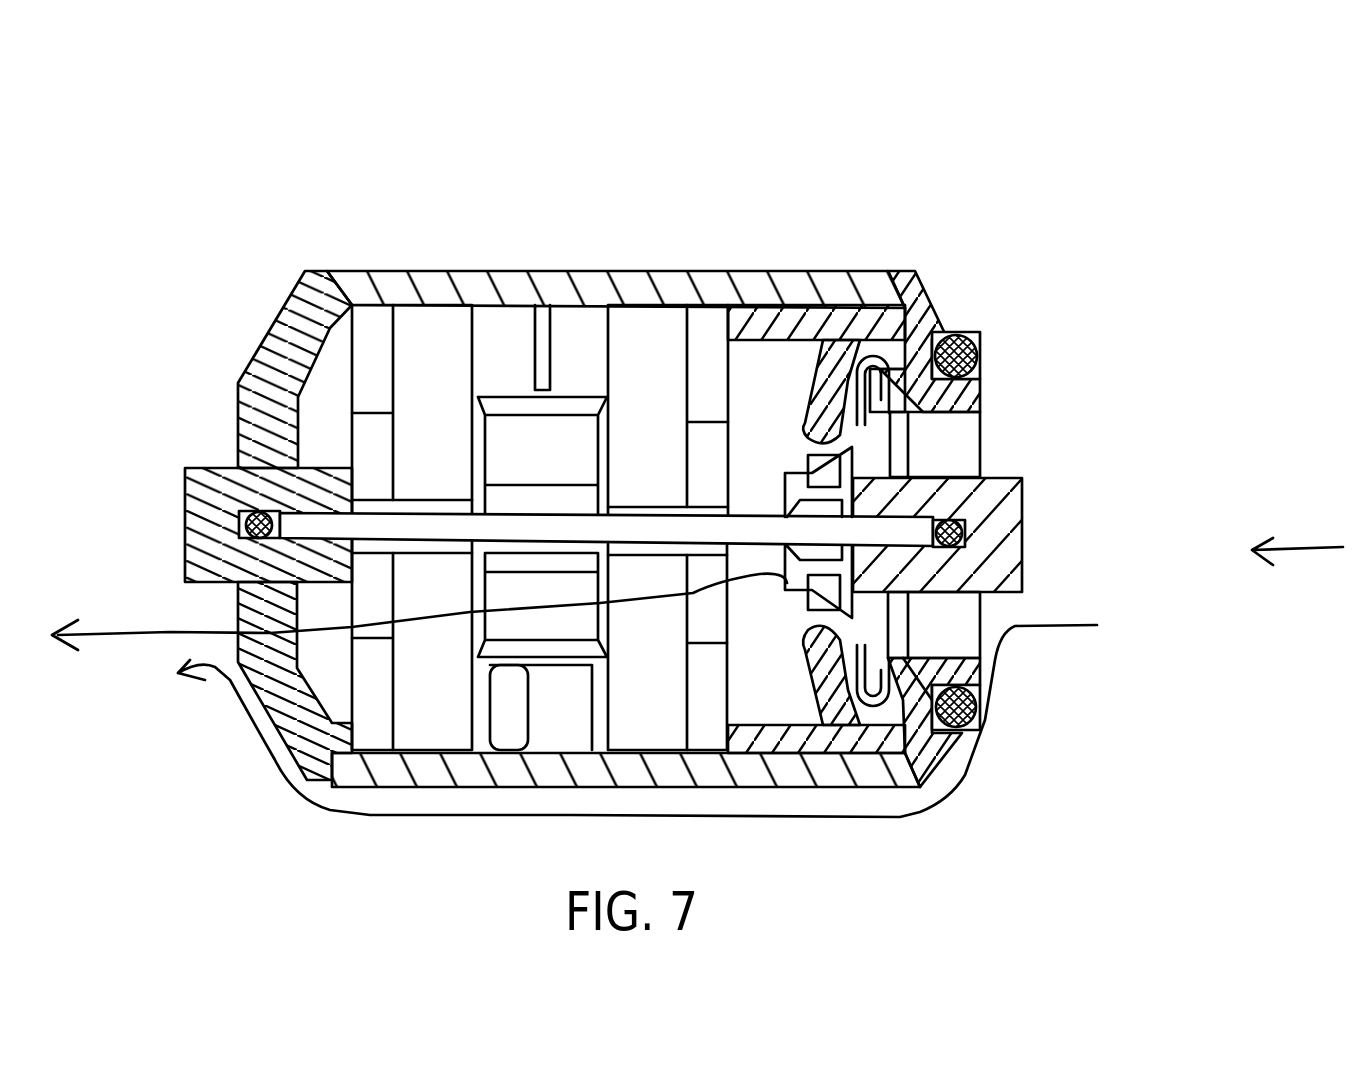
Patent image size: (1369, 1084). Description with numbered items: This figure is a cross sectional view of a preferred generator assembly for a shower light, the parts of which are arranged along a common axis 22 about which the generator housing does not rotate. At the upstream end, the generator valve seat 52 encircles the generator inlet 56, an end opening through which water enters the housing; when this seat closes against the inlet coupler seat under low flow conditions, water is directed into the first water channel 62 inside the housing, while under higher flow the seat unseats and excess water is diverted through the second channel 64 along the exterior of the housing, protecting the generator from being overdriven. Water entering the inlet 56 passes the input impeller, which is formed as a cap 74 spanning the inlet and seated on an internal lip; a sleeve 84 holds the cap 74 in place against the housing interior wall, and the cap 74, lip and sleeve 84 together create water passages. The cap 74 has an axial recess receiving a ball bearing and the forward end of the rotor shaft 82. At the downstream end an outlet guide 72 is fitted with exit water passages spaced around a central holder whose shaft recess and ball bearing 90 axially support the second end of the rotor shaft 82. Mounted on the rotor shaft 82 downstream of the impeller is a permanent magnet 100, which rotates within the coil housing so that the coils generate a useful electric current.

The axis 22 is at (1297, 540).
The generator valve seat 52 is at (978, 349).
The generator inlet 56 is at (1027, 443).
The first water channel 62 is at (870, 650).
The second channel 64 is at (990, 730).
The outlet guide 72 is at (255, 355).
The cap 74 is at (907, 378).
The rotor shaft 82 is at (577, 530).
The sleeve 84 is at (845, 330).
The ball bearing 90 is at (252, 528).
The permanent magnet 100 is at (528, 438).